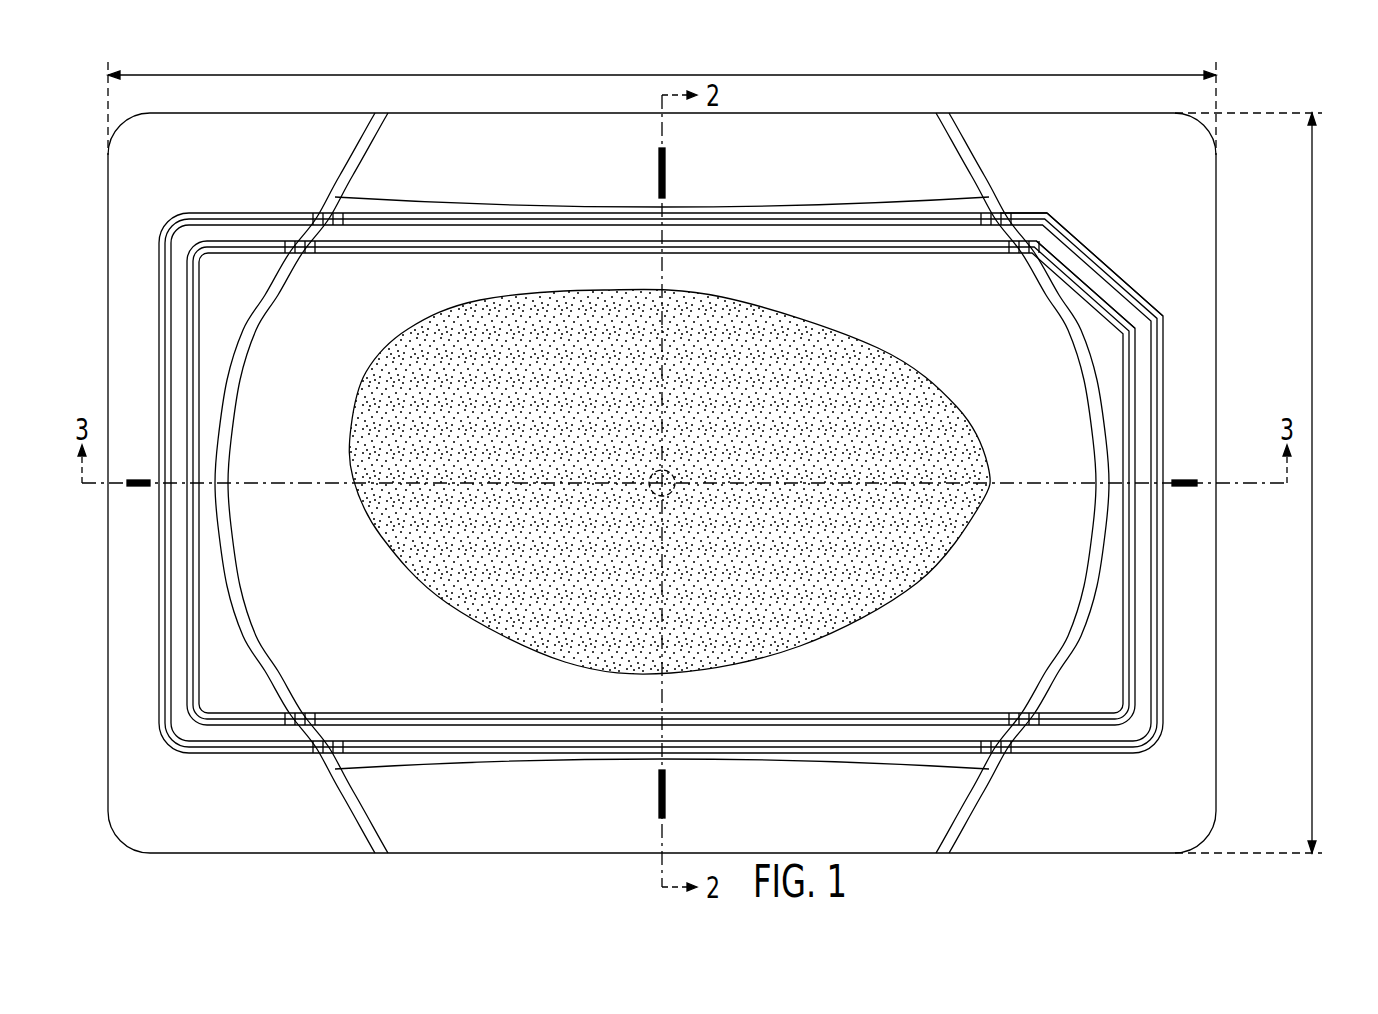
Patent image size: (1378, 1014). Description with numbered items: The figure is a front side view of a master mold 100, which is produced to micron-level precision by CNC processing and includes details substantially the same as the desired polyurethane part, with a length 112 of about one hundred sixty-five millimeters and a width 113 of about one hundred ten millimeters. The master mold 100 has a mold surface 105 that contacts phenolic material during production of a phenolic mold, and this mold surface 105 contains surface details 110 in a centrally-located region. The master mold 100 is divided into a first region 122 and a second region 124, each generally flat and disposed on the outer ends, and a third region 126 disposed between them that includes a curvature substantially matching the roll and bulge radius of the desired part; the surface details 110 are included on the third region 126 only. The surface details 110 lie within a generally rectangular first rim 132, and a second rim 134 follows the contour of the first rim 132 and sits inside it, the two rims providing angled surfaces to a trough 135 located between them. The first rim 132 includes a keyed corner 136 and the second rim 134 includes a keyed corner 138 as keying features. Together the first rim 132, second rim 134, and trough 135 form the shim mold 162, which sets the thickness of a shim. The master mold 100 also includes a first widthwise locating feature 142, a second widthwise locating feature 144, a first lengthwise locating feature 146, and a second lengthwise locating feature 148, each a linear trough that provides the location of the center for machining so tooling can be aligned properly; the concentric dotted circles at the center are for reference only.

The master mold 100 is at (1330, 118).
The mold surface 105 is at (308, 384).
The surface details 110 is at (814, 309).
The length 112 is at (402, 76).
The width 113 is at (1311, 258).
The first region 122 is at (301, 143).
The second region 124 is at (1034, 135).
The third region 126 is at (509, 142).
The first rim 132 is at (240, 212).
The second rim 134 is at (217, 241).
The trough 135 is at (293, 236).
The keyed corner 136 is at (1133, 288).
The keyed corner 138 is at (1127, 321).
The first widthwise locating feature 142 is at (666, 158).
The second widthwise locating feature 144 is at (665, 797).
The first lengthwise locating feature 146 is at (131, 479).
The second lengthwise locating feature 148 is at (1173, 480).
The shim mold 162 is at (1042, 203).